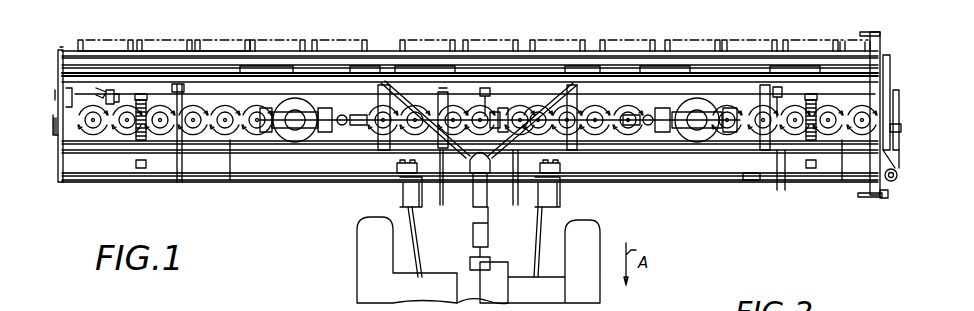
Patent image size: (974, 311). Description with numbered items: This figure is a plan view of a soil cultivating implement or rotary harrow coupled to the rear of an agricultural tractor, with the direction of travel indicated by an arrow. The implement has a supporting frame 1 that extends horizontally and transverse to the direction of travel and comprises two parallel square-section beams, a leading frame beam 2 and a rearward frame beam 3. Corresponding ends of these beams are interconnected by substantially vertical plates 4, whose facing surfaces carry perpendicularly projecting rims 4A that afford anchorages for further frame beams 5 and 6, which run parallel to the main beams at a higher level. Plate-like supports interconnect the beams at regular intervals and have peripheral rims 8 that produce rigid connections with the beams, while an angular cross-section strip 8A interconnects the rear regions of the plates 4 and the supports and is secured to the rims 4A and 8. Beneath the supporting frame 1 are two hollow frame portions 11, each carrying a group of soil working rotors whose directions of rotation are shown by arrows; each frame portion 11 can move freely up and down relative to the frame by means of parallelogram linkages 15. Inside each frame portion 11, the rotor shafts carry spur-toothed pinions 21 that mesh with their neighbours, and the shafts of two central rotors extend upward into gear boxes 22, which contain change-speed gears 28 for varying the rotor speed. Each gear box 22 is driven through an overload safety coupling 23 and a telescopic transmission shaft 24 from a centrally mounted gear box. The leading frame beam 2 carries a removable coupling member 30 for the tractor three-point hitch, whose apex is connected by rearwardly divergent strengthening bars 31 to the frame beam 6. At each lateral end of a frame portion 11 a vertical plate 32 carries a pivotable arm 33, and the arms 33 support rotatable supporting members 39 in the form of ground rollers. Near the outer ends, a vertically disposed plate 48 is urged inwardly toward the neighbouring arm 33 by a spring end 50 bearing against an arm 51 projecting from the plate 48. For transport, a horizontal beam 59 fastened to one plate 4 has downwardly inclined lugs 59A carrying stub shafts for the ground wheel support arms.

The supporting frame 1 is at (145, 178).
The leading frame beam 2 is at (115, 172).
The rearward frame beam 3 is at (148, 52).
The vertical plate 4 is at (58, 58).
The rim 4A is at (67, 107).
The further frame beam 5 is at (100, 153).
The further frame beam 6 is at (213, 77).
The rim 8 is at (193, 170).
The angular cross-section strip 8A is at (310, 70).
The hollow frame portion 11 is at (842, 140).
The parallelogram linkage 15 is at (774, 189).
The spur-toothed pinion 21 is at (45, 141).
The gear box 22 is at (305, 128).
The overload safety coupling 23 is at (330, 128).
The telescopic transmission shaft 24 is at (358, 130).
The change-speed gear 28 is at (267, 130).
The coupling member 30 is at (445, 190).
The strengthening bar 31 is at (502, 150).
The vertical plate 32 is at (899, 112).
The arm 33 is at (890, 63).
The rotatable supporting member 39 is at (287, 23).
The plate 48 is at (898, 100).
The spring end 50 is at (900, 152).
The arm 51 is at (903, 128).
The horizontal beam 59 is at (893, 190).
The lug 59A is at (870, 197).